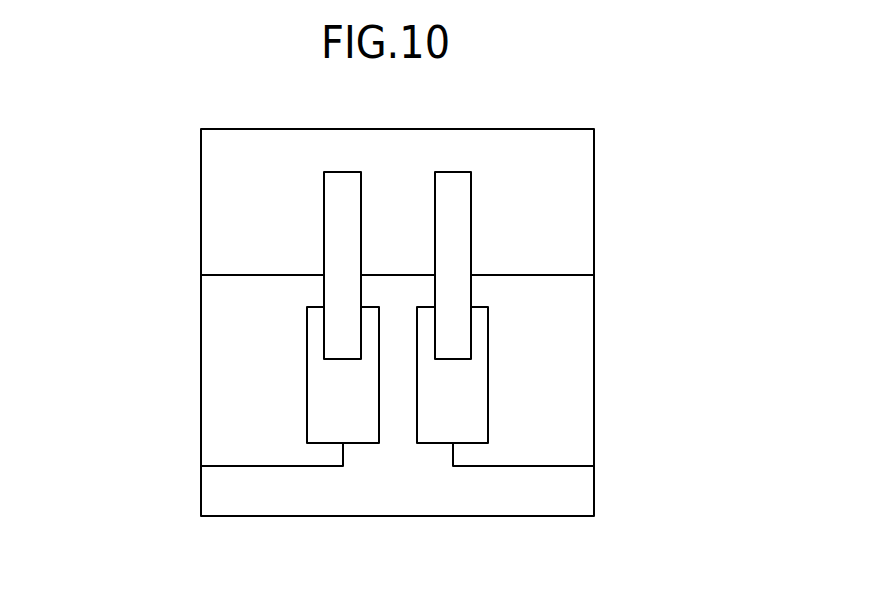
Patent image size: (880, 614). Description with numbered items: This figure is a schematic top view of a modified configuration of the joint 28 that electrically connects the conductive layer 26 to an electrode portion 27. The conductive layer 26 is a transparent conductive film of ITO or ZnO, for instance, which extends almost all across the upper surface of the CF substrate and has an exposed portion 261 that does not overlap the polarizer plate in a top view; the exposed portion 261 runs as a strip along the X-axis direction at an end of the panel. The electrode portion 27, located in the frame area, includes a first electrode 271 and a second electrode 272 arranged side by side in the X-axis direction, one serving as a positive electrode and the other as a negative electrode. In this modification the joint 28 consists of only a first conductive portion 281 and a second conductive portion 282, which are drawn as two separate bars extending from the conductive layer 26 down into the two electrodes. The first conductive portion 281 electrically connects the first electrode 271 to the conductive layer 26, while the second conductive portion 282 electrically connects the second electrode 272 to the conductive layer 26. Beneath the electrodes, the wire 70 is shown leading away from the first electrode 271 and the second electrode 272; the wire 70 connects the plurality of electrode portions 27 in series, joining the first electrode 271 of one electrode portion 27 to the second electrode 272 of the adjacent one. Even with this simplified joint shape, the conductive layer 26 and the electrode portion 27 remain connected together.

The conductive layer 26 is at (480, 322).
The exposed portion 261 is at (570, 182).
The electrode portion 27 is at (398, 375).
The first electrode 271 is at (307, 365).
The second electrode 272 is at (488, 365).
The joint 28 is at (396, 265).
The first conductive portion 281 is at (342, 255).
The second conductive portion 282 is at (452, 255).
The wire 70 is at (282, 466).